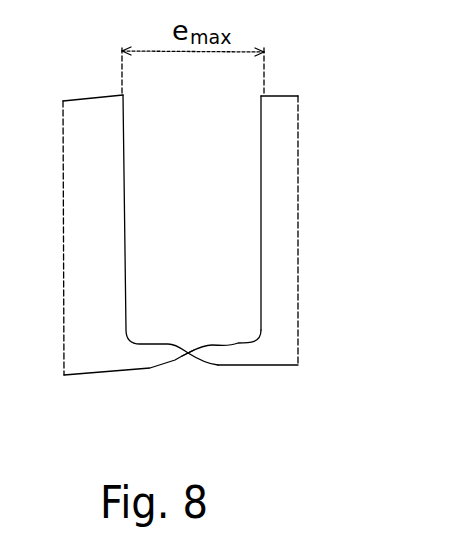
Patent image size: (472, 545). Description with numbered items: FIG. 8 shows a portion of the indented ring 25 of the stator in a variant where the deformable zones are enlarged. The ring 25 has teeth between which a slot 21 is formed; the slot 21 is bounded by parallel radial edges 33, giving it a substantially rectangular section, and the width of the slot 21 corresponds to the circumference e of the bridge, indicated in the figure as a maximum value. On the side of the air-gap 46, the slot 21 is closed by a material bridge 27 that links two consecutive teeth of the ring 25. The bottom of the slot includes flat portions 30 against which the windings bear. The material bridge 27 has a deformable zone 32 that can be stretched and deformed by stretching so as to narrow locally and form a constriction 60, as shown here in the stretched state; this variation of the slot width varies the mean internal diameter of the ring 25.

The slots 21 is at (237, 87).
The indented ring 25 is at (280, 130).
The radial edges 33 is at (265, 173).
The constriction 60 is at (188, 350).
The flat portions 30 is at (238, 342).
The material bridges 27 is at (150, 355).
The deformable zone 32 is at (217, 355).
The air-gap 46 is at (273, 367).